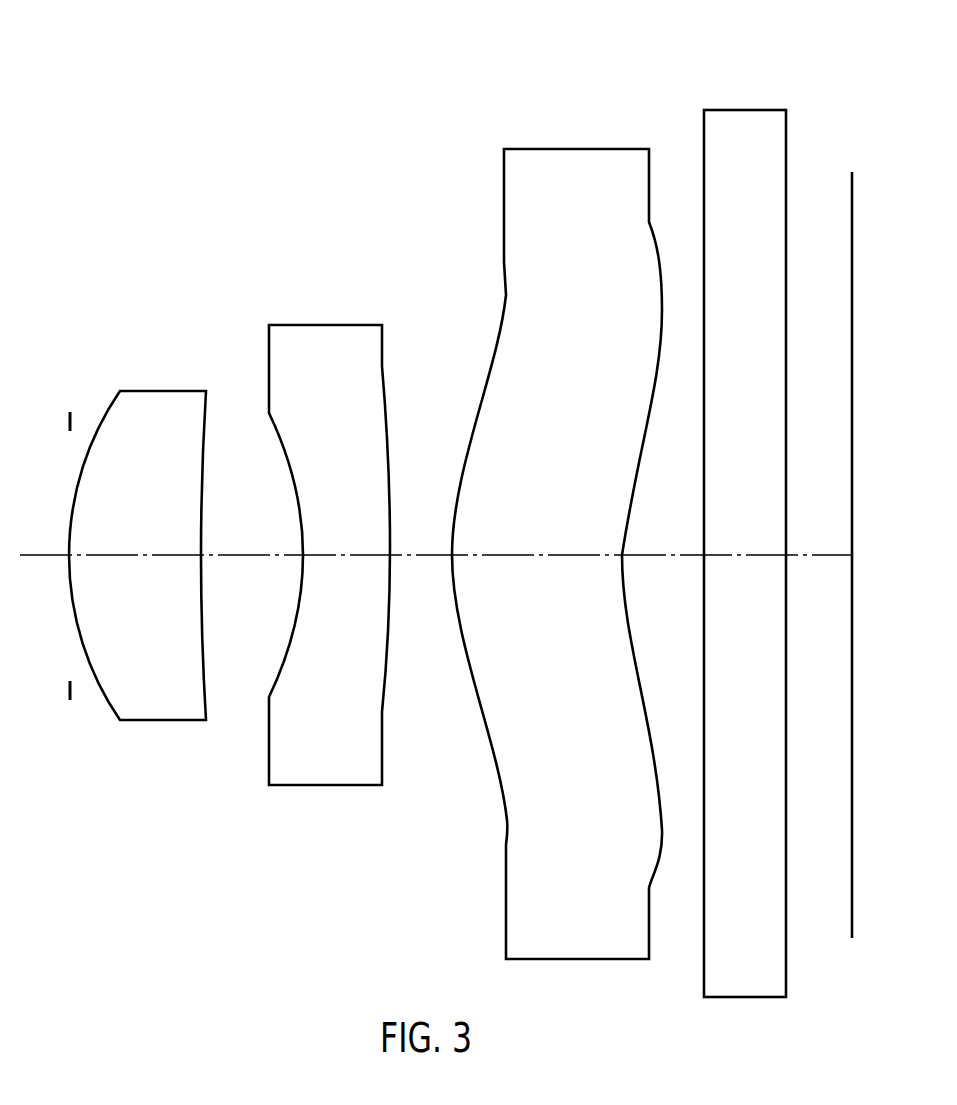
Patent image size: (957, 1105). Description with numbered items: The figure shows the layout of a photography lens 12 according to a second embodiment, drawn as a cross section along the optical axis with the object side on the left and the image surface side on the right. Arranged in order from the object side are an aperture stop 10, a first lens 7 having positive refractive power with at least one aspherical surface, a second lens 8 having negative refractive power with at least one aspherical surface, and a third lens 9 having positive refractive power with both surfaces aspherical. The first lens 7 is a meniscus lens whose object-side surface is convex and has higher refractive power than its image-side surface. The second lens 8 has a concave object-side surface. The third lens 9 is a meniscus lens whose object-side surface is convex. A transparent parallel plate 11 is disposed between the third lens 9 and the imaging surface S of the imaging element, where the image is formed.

The first lens 7 is at (162, 391).
The second lens 8 is at (325, 325).
The third lens 9 is at (576, 149).
The aperture stop 10 is at (70, 420).
The transparent parallel plate 11 is at (744, 110).
The photography lens 12 is at (415, 198).
The imaging surface S is at (853, 285).